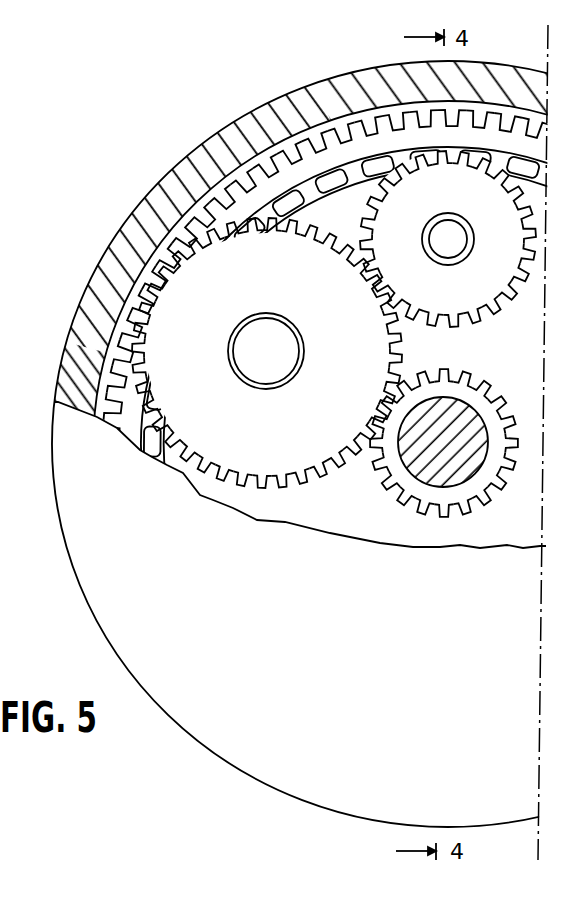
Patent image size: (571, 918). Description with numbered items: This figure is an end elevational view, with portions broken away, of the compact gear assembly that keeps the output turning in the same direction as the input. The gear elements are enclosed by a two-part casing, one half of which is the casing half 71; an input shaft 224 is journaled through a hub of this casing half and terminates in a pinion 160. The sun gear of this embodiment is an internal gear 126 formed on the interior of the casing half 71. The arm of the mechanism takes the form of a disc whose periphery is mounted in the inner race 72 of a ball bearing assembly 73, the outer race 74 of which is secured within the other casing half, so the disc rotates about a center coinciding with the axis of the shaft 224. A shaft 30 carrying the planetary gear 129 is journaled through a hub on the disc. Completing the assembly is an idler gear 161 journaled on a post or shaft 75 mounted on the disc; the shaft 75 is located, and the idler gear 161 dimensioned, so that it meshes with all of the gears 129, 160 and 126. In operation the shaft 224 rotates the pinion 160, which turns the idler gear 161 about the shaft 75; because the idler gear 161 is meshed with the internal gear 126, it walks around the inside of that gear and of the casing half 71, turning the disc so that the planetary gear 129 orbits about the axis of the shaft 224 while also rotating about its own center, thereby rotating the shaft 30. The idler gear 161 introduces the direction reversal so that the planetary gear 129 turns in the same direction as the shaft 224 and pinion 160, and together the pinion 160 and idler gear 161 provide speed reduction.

The casing half 71 is at (256, 110).
The internal gear 126 is at (230, 200).
The inner race 72 is at (308, 190).
The ball bearing assembly 73 is at (382, 150).
The outer race 74 is at (448, 147).
The idler gear 161 is at (282, 458).
The shaft 75 is at (290, 346).
The planetary gear 129 is at (462, 302).
The shaft 30 is at (455, 233).
The pinion 160 is at (418, 505).
The input shaft 224 is at (456, 417).